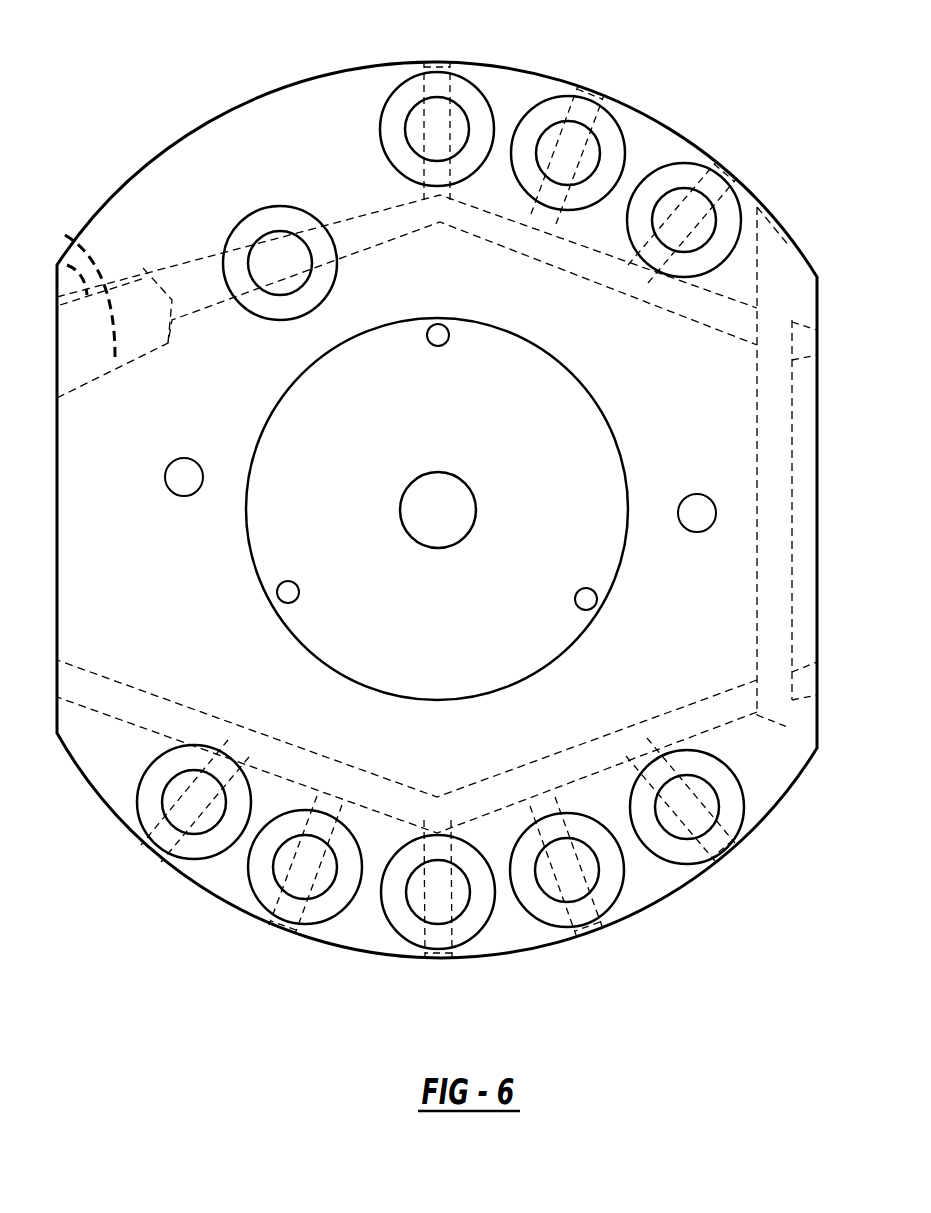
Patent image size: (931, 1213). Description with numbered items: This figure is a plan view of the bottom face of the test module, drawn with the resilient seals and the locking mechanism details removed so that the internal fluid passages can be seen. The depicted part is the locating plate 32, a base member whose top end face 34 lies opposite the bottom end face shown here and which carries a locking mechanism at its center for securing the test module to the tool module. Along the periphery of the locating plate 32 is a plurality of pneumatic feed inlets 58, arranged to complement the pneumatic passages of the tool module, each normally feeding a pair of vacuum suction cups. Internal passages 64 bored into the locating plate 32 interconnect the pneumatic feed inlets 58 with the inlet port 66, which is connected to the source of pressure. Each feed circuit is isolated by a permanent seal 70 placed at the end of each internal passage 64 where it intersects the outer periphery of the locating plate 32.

The locating plate 32 is at (449, 510).
The top end face 34 is at (473, 509).
The pneumatic feed inlets 58 is at (440, 483).
The internal passages 64 is at (424, 581).
The inlet port 66 is at (75, 285).
The permanent seal 70 is at (485, 521).